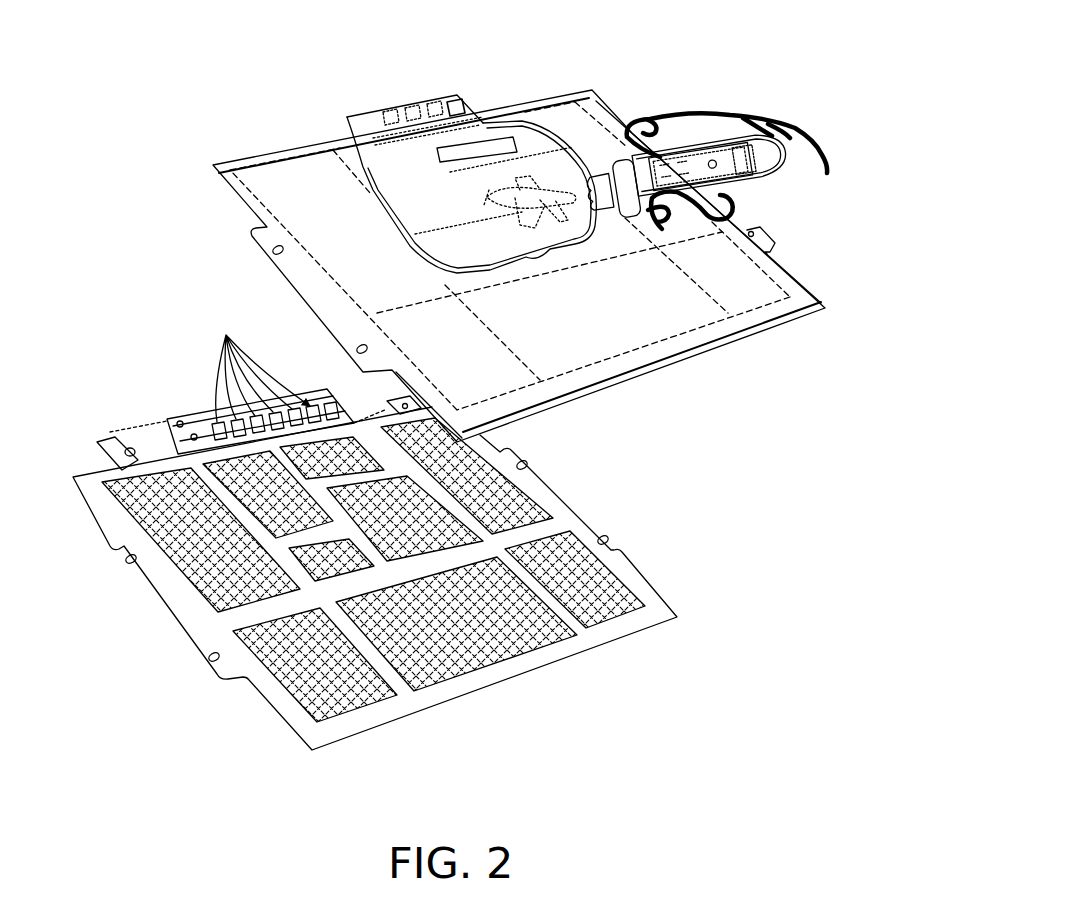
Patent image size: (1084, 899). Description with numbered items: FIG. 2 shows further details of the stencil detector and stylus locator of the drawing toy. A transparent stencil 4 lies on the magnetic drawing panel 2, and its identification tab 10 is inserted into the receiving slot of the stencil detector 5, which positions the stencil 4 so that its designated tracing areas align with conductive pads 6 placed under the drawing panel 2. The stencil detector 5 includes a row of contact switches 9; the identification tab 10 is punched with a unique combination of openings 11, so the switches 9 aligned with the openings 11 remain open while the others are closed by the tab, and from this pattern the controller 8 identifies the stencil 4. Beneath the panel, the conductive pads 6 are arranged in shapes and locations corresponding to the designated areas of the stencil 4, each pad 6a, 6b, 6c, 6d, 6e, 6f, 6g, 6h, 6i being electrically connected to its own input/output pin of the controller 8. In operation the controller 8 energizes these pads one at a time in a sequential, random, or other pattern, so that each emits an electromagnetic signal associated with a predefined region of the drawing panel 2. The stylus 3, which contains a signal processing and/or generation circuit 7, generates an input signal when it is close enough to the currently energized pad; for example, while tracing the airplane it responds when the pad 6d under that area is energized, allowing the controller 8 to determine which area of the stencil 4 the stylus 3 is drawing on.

The drawing panel 2 is at (250, 190).
The stylus 3 is at (636, 177).
The stencil 4 is at (372, 189).
The stencil detector 5 is at (194, 432).
The conductive pads 6 is at (422, 573).
The conductive pad 6a is at (289, 510).
The conductive pad 6b is at (351, 574).
The conductive pad 6c is at (346, 469).
The conductive pad 6d is at (411, 527).
The conductive pad 6e is at (219, 555).
The conductive pad 6f is at (493, 501).
The conductive pad 6g is at (336, 676).
The conductive pad 6h is at (460, 634).
The conductive pad 6i is at (583, 595).
The signal processing and/or generation circuit 7 is at (677, 172).
The controller 8 is at (112, 446).
The contact switches 9 is at (226, 335).
The identification tab 10 is at (378, 120).
The openings 11 is at (464, 106).